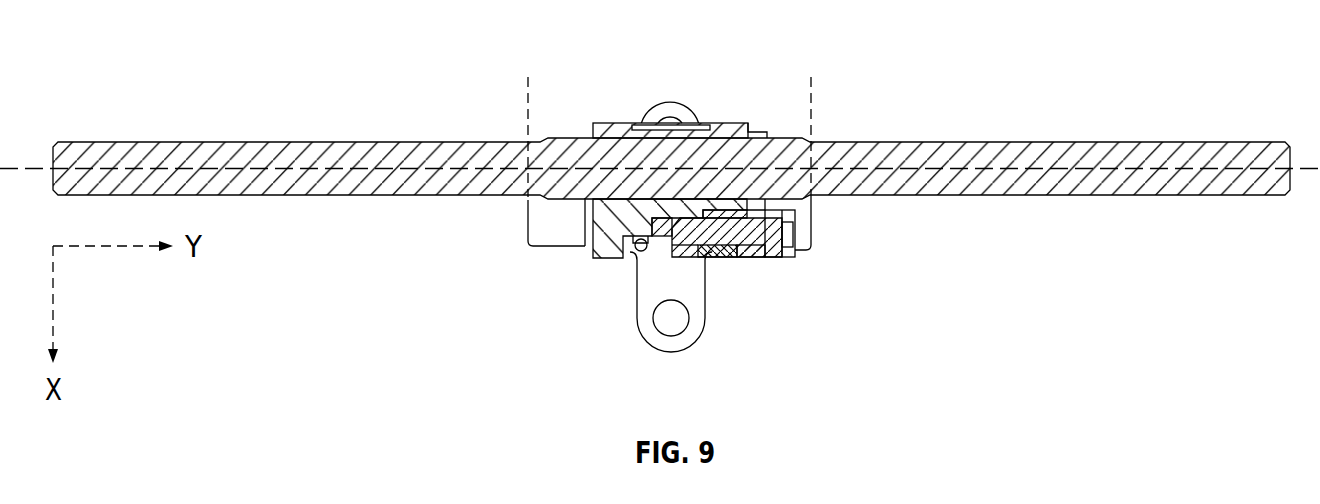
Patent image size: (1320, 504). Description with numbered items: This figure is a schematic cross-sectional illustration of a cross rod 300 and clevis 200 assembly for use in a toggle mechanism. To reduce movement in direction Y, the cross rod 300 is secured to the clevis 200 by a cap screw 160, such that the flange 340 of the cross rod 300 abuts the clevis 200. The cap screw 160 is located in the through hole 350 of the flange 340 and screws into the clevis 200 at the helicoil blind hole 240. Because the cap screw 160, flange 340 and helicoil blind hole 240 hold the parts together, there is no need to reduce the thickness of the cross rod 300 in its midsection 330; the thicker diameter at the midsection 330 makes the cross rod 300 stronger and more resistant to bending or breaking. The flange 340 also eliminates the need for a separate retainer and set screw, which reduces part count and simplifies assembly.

The cap screw 160 is at (694, 230).
The clevis 200 is at (598, 256).
The helicoil blind hole 240 is at (708, 256).
The cross rod 300 is at (1012, 157).
The midsection 330 is at (811, 77).
The flange 340 is at (773, 213).
The through hole 350 is at (753, 257).